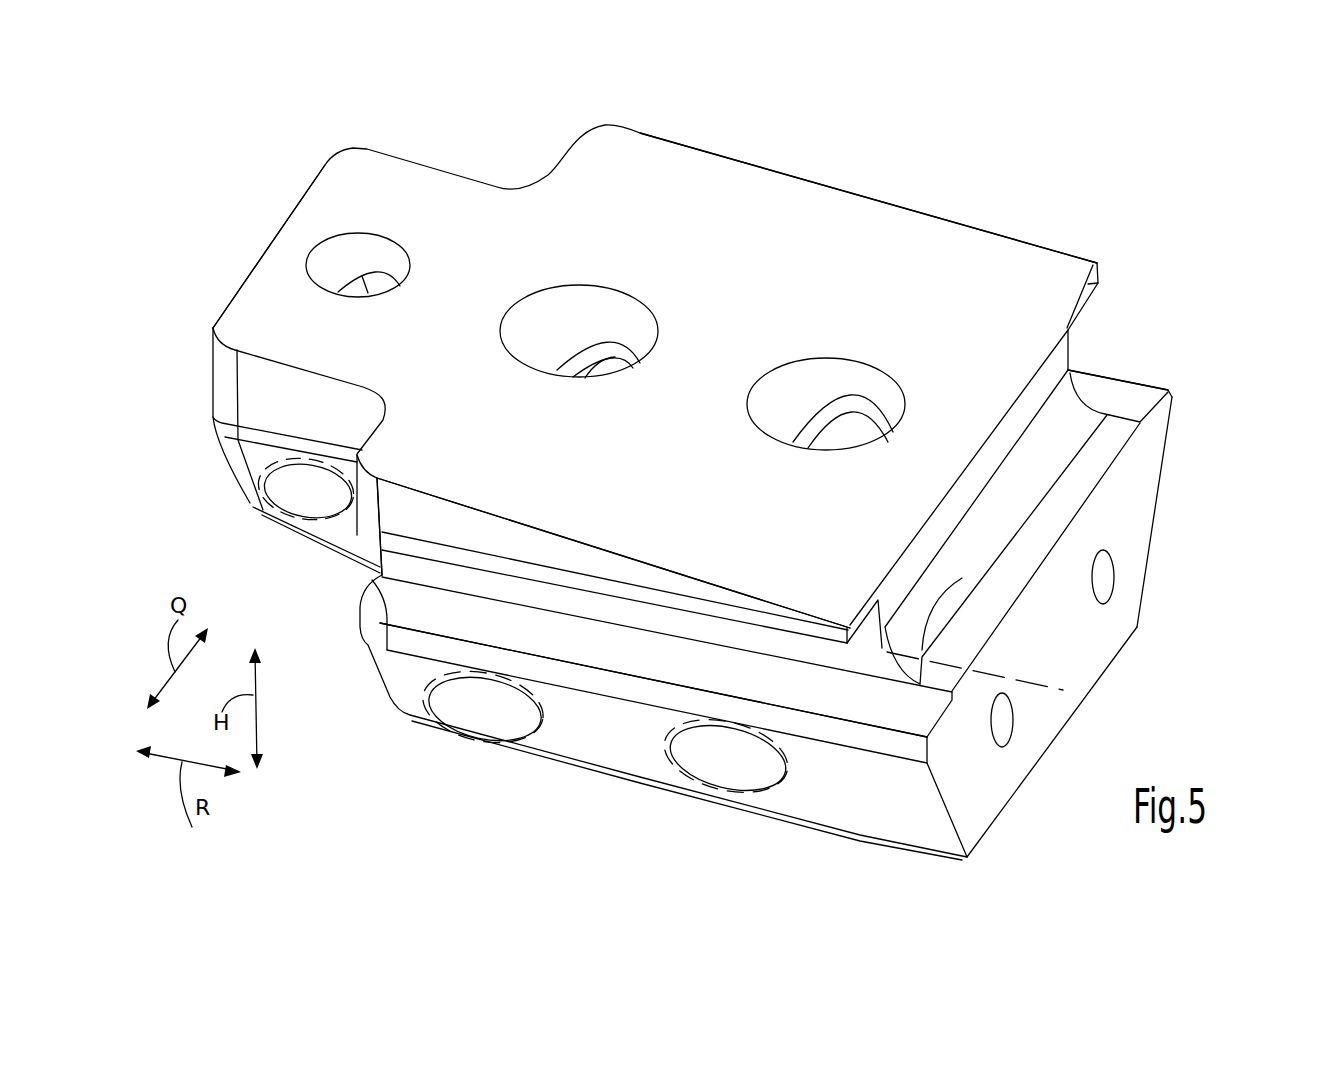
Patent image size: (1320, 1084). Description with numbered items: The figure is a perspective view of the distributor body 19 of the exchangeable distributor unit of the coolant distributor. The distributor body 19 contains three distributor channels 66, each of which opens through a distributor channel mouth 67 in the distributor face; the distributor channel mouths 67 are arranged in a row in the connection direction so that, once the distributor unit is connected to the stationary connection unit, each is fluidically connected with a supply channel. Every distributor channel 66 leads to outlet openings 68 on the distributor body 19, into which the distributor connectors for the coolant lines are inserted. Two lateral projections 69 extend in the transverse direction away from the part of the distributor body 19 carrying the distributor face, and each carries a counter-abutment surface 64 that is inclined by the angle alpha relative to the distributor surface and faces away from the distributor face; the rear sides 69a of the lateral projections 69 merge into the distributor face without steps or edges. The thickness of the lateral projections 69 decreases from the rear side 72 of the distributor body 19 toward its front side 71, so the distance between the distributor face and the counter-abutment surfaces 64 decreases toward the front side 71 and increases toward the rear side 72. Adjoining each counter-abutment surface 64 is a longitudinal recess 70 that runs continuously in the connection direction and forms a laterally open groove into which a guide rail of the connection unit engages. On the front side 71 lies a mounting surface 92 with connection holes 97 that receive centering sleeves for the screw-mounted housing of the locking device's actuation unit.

The distributor body 19 is at (1088, 200).
The counter-abutment surface 64 is at (403, 552).
The distributor channel 66 is at (343, 265).
The distributor channel mouth 67 is at (407, 257).
The outlet opening 68 is at (297, 492).
The lateral projection 69 is at (1093, 288).
The rear side of lateral projection 69a is at (838, 215).
The longitudinal recess 70 is at (456, 613).
The front side 71 is at (1134, 662).
The rear side 72 is at (216, 249).
The mounting surface 92 is at (1143, 473).
The connection hole 97 is at (1107, 584).